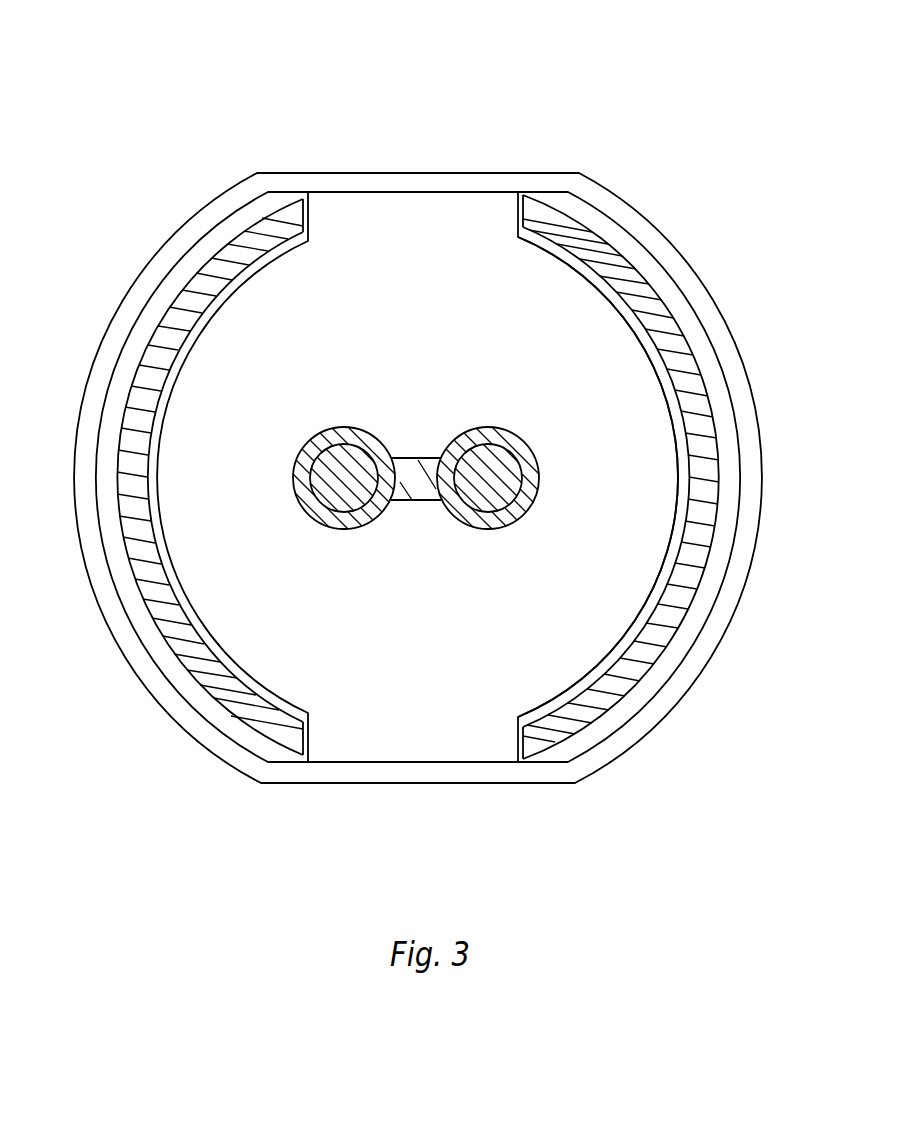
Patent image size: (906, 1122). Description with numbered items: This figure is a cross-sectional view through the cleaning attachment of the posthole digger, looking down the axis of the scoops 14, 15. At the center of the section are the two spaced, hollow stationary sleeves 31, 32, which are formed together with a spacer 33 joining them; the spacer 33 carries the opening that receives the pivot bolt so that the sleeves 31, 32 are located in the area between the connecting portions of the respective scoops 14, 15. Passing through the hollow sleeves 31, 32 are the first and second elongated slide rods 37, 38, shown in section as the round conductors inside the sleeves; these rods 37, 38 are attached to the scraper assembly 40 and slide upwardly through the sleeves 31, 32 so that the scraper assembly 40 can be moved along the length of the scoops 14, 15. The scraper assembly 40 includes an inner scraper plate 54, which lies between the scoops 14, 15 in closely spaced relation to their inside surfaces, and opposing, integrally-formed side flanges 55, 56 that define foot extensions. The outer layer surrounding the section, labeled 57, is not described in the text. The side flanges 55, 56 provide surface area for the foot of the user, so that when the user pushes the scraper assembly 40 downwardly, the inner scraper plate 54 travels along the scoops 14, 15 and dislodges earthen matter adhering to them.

The scraper assembly 40 is at (165, 172).
The outer jacket 57 is at (725, 346).
The side flange 55 is at (412, 236).
The side flange 56 is at (360, 720).
The scoop 14 is at (150, 562).
The scoop 15 is at (703, 457).
The inner scraper plate 54 is at (622, 575).
The first elongated slide rod 37 is at (310, 457).
The hollow stationary sleeve 31 is at (323, 527).
The hollow stationary sleeve 32 is at (488, 532).
The second elongated slide rod 38 is at (490, 470).
The spacer 33 is at (413, 466).